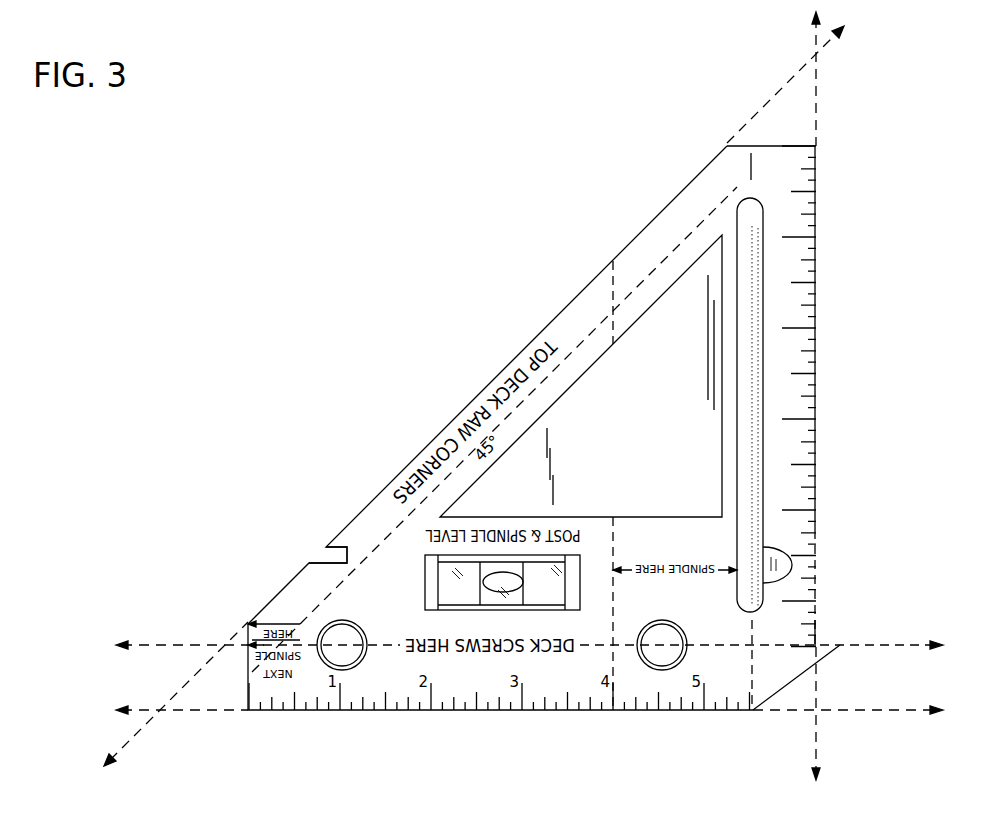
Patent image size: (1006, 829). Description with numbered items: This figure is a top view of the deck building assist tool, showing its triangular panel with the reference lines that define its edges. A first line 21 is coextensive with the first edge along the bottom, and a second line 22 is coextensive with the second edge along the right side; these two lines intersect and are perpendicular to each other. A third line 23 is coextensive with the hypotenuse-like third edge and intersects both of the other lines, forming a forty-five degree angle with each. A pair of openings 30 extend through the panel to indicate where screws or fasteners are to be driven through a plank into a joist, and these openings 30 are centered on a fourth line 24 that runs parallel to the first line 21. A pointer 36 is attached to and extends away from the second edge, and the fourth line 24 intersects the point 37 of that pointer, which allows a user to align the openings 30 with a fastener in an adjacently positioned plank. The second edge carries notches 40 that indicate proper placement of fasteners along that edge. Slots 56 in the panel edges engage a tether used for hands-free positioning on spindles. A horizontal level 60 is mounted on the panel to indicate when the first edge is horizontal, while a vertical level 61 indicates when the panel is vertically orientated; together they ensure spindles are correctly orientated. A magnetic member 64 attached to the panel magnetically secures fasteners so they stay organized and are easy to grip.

The first line 21 is at (892, 712).
The second line 22 is at (816, 736).
The third line 23 is at (767, 103).
The fourth line 24 is at (152, 644).
The openings 30 is at (340, 667).
The pointer 36 is at (828, 644).
The point 37 is at (838, 645).
The notches 40 is at (816, 214).
The slots 56 is at (326, 547).
The horizontal level 60 is at (448, 568).
The vertical level 61 is at (775, 548).
The magnetic member 64 is at (585, 395).